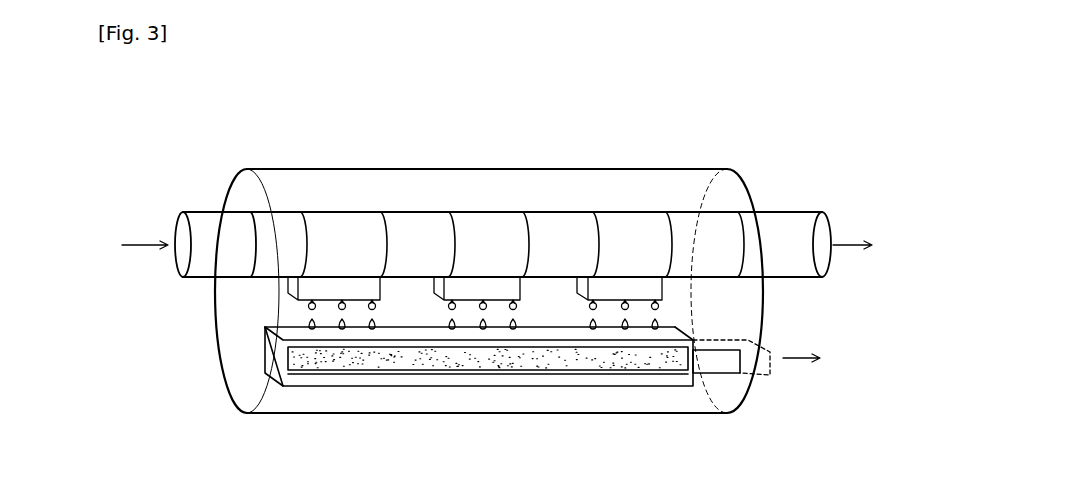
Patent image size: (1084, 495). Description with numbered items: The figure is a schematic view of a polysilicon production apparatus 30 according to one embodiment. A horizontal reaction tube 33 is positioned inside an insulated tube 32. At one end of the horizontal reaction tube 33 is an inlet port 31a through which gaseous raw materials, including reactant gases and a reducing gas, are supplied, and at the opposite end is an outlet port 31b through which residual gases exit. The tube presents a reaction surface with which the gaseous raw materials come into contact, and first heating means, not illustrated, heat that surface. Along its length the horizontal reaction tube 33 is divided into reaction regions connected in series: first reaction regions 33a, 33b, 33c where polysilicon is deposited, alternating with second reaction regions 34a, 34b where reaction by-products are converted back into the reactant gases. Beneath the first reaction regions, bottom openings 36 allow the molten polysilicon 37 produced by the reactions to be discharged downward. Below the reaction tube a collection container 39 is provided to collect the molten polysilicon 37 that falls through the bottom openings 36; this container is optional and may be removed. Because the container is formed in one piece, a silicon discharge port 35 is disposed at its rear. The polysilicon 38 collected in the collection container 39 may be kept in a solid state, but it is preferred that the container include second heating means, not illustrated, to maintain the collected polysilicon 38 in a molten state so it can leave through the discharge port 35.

The polysilicon production apparatus 30 is at (504, 259).
The inlet port 31a is at (205, 212).
The outlet port 31b is at (788, 212).
The insulated tube 32 is at (335, 168).
The horizontal reaction tube 33 is at (490, 226).
The first reaction region 33a is at (356, 210).
The first reaction region 33b is at (500, 210).
The first reaction region 33c is at (637, 225).
The second reaction region 34a is at (422, 218).
The second reaction region 34b is at (562, 220).
The silicon discharge port 35 is at (735, 375).
The bottom openings 36 is at (663, 288).
The molten polysilicon 37 is at (658, 307).
The polysilicon 38 is at (768, 373).
The collection container 39 is at (526, 390).